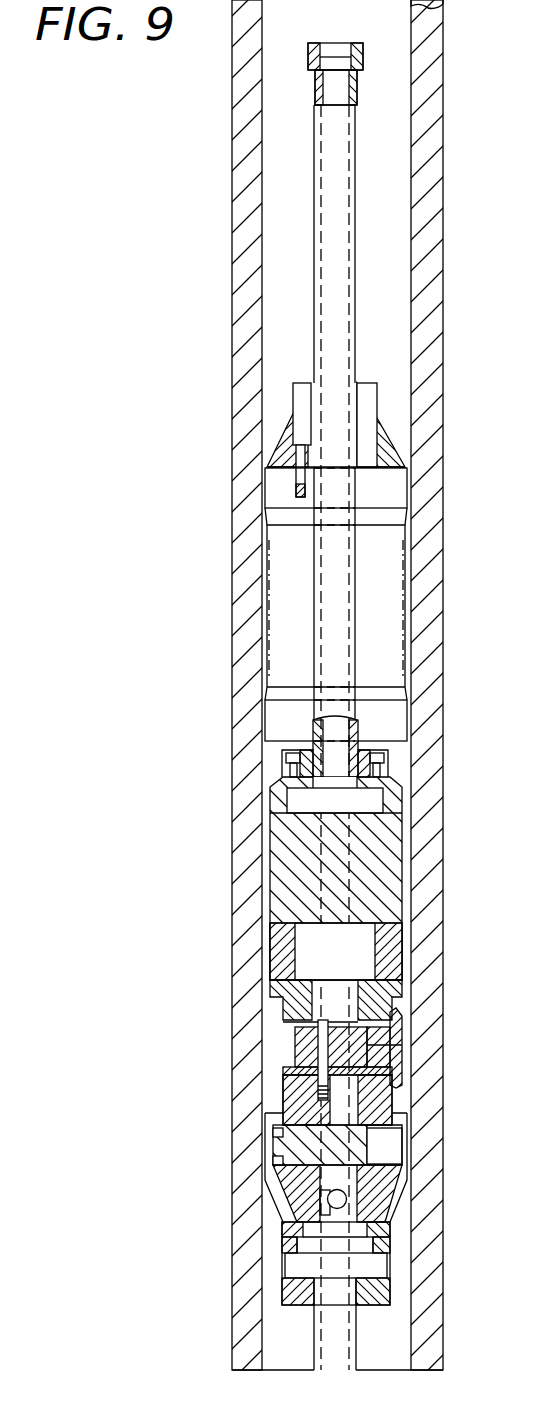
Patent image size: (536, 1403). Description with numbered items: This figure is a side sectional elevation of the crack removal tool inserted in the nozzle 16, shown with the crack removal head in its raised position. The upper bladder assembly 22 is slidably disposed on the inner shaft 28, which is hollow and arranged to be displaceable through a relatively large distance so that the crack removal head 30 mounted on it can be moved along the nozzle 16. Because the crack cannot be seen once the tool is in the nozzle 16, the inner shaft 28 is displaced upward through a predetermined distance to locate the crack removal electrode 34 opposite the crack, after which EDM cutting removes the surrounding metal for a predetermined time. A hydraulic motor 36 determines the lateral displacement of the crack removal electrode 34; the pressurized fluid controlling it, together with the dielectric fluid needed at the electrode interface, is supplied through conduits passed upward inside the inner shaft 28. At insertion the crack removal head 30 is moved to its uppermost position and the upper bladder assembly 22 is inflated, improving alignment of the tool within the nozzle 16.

The nozzle 16 is at (240, 420).
The upper bladder assembly 22 is at (275, 625).
The inner shaft 28 is at (313, 245).
The crack removal head 30 is at (300, 1102).
The crack removal electrode 34 is at (297, 1058).
The hydraulic motor 36 is at (283, 1158).